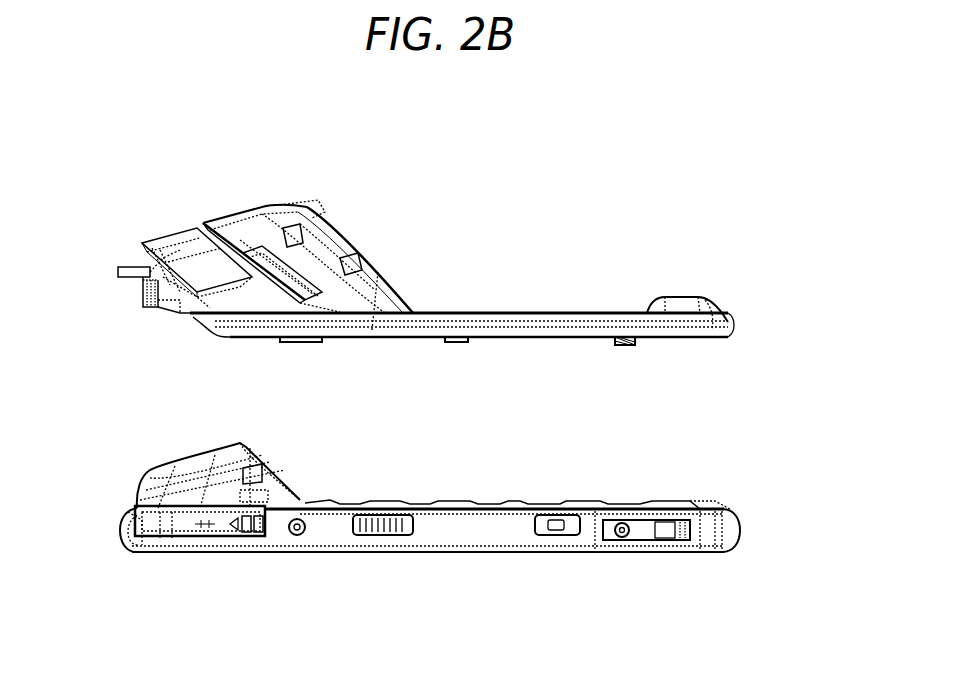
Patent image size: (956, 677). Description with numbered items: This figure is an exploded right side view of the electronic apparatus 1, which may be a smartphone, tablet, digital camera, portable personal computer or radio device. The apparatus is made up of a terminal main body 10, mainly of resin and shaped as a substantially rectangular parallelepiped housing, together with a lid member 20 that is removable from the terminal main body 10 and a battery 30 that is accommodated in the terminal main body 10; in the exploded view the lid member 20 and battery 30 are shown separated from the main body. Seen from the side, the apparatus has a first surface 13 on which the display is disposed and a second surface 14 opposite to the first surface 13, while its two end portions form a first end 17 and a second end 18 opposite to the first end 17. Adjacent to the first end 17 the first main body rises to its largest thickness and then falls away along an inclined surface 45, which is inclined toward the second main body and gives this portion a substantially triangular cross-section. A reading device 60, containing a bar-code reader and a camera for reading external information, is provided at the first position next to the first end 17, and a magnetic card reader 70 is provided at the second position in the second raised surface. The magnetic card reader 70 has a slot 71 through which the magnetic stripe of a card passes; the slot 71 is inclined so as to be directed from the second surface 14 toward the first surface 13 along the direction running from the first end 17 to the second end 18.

The electronic apparatus 1 is at (389, 214).
The terminal main body 10 is at (328, 545).
The first surface 13 is at (452, 553).
The second surface 14 is at (559, 313).
The first end 17 is at (124, 538).
The second end 18 is at (737, 525).
The lid member 20 is at (631, 313).
The battery 30 is at (440, 501).
The inclined surface 45 is at (378, 272).
The reading device 60 is at (190, 460).
The magnetic card reader 70 is at (188, 230).
The slot 71 is at (228, 250).